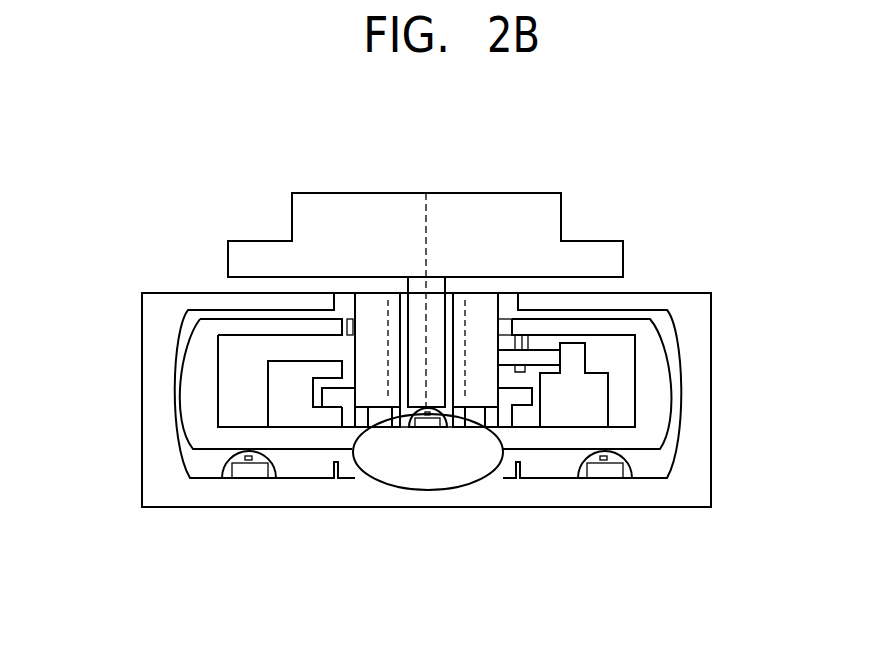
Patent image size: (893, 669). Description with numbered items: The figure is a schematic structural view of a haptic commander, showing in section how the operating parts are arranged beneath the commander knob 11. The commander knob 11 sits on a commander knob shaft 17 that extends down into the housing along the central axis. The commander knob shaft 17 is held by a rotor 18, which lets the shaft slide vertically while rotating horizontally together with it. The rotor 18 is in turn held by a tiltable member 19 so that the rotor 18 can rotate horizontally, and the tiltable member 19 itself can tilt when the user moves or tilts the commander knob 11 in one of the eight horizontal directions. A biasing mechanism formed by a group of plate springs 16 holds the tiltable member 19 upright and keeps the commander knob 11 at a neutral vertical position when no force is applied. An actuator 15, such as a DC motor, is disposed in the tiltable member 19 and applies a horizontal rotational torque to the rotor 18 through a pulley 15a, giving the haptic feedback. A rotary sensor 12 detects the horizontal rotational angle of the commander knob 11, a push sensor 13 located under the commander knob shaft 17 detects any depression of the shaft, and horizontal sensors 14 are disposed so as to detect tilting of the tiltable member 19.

The commander knob 11 is at (521, 223).
The rotary sensor 12 is at (290, 400).
The push sensor 13 is at (429, 418).
The horizontal sensor 14 is at (252, 472).
The actuator 15 is at (593, 393).
The pulley 15a is at (543, 355).
The plate springs 16 is at (223, 468).
The commander knob shaft 17 is at (416, 290).
The rotor 18 is at (376, 315).
The tiltable member 19 is at (408, 462).